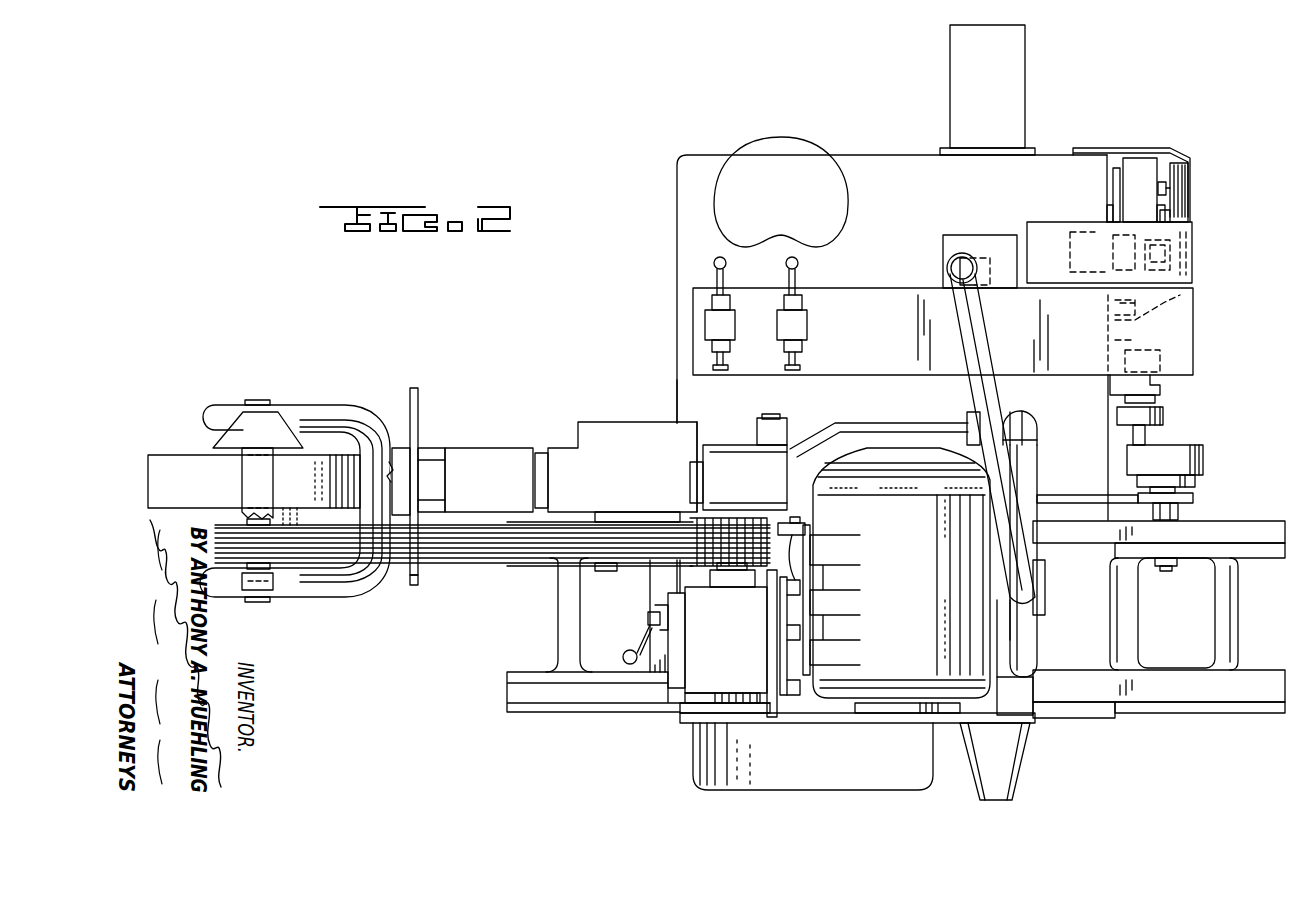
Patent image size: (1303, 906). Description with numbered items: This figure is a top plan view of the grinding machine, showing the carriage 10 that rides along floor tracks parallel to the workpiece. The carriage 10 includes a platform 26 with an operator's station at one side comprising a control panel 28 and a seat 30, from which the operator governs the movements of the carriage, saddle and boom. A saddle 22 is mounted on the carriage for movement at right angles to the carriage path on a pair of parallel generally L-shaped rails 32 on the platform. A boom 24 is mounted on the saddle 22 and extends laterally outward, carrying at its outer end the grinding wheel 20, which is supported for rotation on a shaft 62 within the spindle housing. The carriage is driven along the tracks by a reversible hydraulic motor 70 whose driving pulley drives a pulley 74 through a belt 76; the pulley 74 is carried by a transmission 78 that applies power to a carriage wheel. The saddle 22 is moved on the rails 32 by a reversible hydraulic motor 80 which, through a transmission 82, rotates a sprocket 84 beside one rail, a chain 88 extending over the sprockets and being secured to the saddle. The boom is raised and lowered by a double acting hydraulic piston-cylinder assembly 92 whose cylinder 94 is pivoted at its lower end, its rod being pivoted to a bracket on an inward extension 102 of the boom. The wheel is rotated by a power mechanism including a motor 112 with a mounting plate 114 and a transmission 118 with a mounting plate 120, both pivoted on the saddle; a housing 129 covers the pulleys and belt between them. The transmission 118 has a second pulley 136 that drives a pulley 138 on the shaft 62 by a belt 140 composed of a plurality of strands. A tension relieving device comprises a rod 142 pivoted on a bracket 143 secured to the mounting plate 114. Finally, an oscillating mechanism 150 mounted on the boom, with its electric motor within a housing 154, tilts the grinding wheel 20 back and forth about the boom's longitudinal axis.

The carriage 10 is at (670, 233).
The grinding wheel 20 is at (178, 455).
The saddle 22 is at (1010, 690).
The boom 24 is at (477, 448).
The platform 26 is at (690, 388).
The control panel 28 is at (863, 305).
The seat 30 is at (838, 205).
The rails 32 is at (1248, 535).
The shaft 62 is at (258, 490).
The hydraulic motor 70 is at (1110, 262).
The pulley 74 is at (1190, 190).
The belt 76 is at (1185, 216).
The transmission 78 is at (1130, 177).
The hydraulic motor 80 is at (1155, 380).
The transmission 82 is at (1187, 455).
The sprocket 84 is at (1195, 493).
The chain 88 is at (1070, 497).
The piston-cylinder assembly 92 is at (1037, 423).
The cylinder 94 is at (1036, 435).
The inward extension 102 is at (898, 424).
The motor 112 is at (937, 610).
The mounting plate 114 is at (805, 548).
The transmission 118 is at (696, 638).
The mounting plate 120 is at (772, 655).
The housing 129 is at (705, 753).
The second pulley 136 is at (745, 510).
The pulley 138 is at (225, 520).
The belt 140 is at (460, 560).
The rod 142 is at (795, 535).
The bracket 143 is at (805, 522).
The oscillating mechanism 150 is at (601, 420).
The housing 154 is at (583, 432).